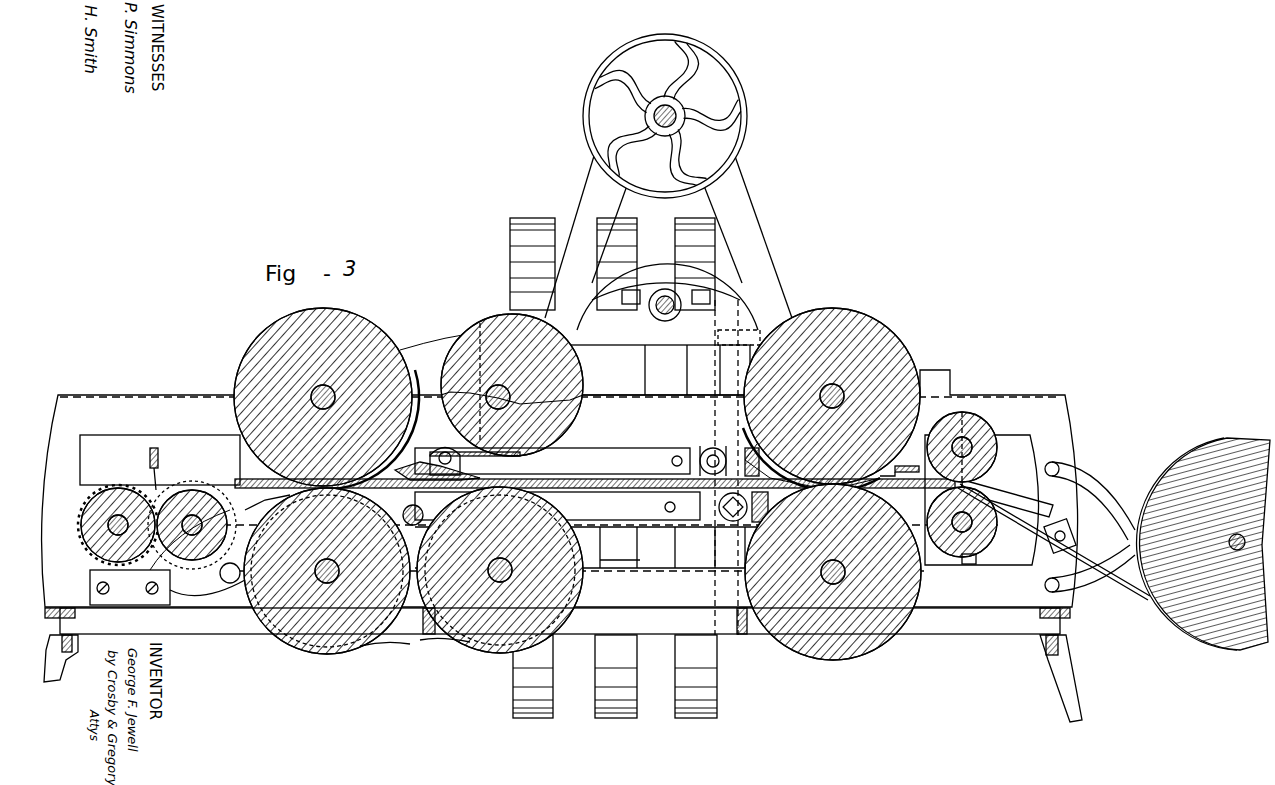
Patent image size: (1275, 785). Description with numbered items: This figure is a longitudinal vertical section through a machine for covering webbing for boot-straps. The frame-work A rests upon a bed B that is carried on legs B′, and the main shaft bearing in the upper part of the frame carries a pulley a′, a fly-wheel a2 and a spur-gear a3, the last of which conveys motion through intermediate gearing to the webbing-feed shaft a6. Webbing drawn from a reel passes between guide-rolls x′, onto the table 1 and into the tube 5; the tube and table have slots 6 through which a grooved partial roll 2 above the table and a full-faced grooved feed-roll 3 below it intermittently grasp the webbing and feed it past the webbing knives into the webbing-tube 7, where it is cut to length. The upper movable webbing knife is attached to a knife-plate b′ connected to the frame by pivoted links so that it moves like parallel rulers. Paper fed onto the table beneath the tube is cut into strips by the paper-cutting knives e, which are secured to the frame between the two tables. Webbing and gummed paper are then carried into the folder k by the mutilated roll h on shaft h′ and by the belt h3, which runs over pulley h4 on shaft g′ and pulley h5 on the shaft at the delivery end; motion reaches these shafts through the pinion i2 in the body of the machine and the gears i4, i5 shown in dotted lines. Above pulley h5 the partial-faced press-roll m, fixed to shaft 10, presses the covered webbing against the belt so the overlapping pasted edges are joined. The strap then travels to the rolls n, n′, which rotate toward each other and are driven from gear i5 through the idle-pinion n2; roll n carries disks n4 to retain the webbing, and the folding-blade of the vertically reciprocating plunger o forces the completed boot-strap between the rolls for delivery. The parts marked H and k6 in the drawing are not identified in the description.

The pulley a′ is at (668, 164).
The fly-wheel a2 is at (657, 310).
The spur-gear a3 is at (615, 689).
The webbing-feed shaft a6 is at (895, 410).
The frame-work A is at (560, 467).
The bed B is at (557, 609).
The legs B′ is at (1062, 690).
The standard / A-frame H is at (908, 337).
The partial-faced roll m is at (272, 340).
The shaft 10 is at (440, 339).
The shaft h′ is at (584, 384).
The mutilated roll h is at (585, 420).
The partial roll 2 is at (832, 385).
The feed-roll 3 is at (833, 579).
The paper-cutting knives e is at (595, 484).
The webbing-tube 7 is at (612, 478).
The knife-plate b′ is at (712, 446).
The slots 6 is at (880, 494).
The tube 5 is at (899, 462).
The table 1 is at (905, 490).
The folder k is at (418, 475).
The lower left roll k6 is at (327, 571).
The shaft g′ is at (500, 570).
The pinion i2 is at (407, 506).
The gear i4 is at (585, 560).
The gear i5 is at (267, 502).
The roll n′ is at (106, 525).
The roll n is at (193, 490).
The disks n4 is at (205, 490).
The idle-pinion n2 is at (220, 590).
The plunger o is at (150, 456).
The guide-rolls x′ is at (962, 475).
The belt h3 is at (420, 648).
The pulley h4 is at (445, 640).
The pulley h5 is at (385, 645).